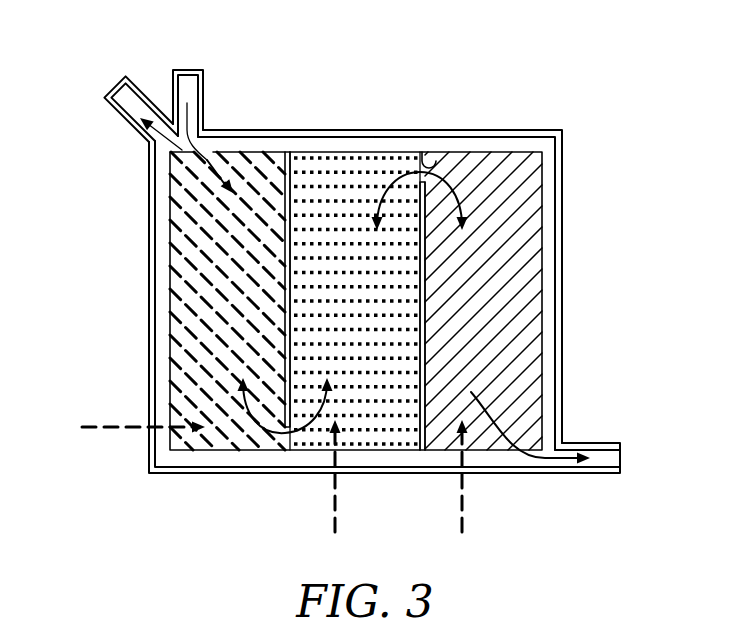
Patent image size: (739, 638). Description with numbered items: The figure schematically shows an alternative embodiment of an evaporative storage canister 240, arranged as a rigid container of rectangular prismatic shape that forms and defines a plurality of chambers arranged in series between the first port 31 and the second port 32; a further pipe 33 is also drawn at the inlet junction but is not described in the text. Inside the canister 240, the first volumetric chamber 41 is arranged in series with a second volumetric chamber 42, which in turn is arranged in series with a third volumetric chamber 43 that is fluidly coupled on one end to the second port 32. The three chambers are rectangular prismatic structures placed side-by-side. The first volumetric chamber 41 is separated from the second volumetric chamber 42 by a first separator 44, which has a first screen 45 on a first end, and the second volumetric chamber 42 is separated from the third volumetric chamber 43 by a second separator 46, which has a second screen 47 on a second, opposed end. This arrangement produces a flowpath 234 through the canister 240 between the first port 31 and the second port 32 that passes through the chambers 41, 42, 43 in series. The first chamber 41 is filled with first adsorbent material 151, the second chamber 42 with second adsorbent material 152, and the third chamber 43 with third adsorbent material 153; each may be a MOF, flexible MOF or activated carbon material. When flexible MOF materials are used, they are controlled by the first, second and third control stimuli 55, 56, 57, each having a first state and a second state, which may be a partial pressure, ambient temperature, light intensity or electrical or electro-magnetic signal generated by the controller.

The first port 31 is at (188, 85).
The second port 32 is at (620, 458).
The bypass pipe 33 is at (127, 98).
The first volumetric chamber 41 is at (252, 170).
The second volumetric chamber 42 is at (354, 170).
The third volumetric chamber 43 is at (483, 165).
The first separator 44 is at (283, 343).
The first screen 45 is at (283, 437).
The second separator 46 is at (423, 265).
The second screen 47 is at (437, 157).
The first control stimulus 55 is at (126, 428).
The second control stimulus 56 is at (335, 491).
The third control stimulus 57 is at (462, 491).
The first adsorbent material 151 is at (205, 284).
The second adsorbent material 152 is at (350, 403).
The third adsorbent material 153 is at (505, 363).
The flowpath 234 is at (193, 150).
The evaporative storage canister 240 is at (567, 115).